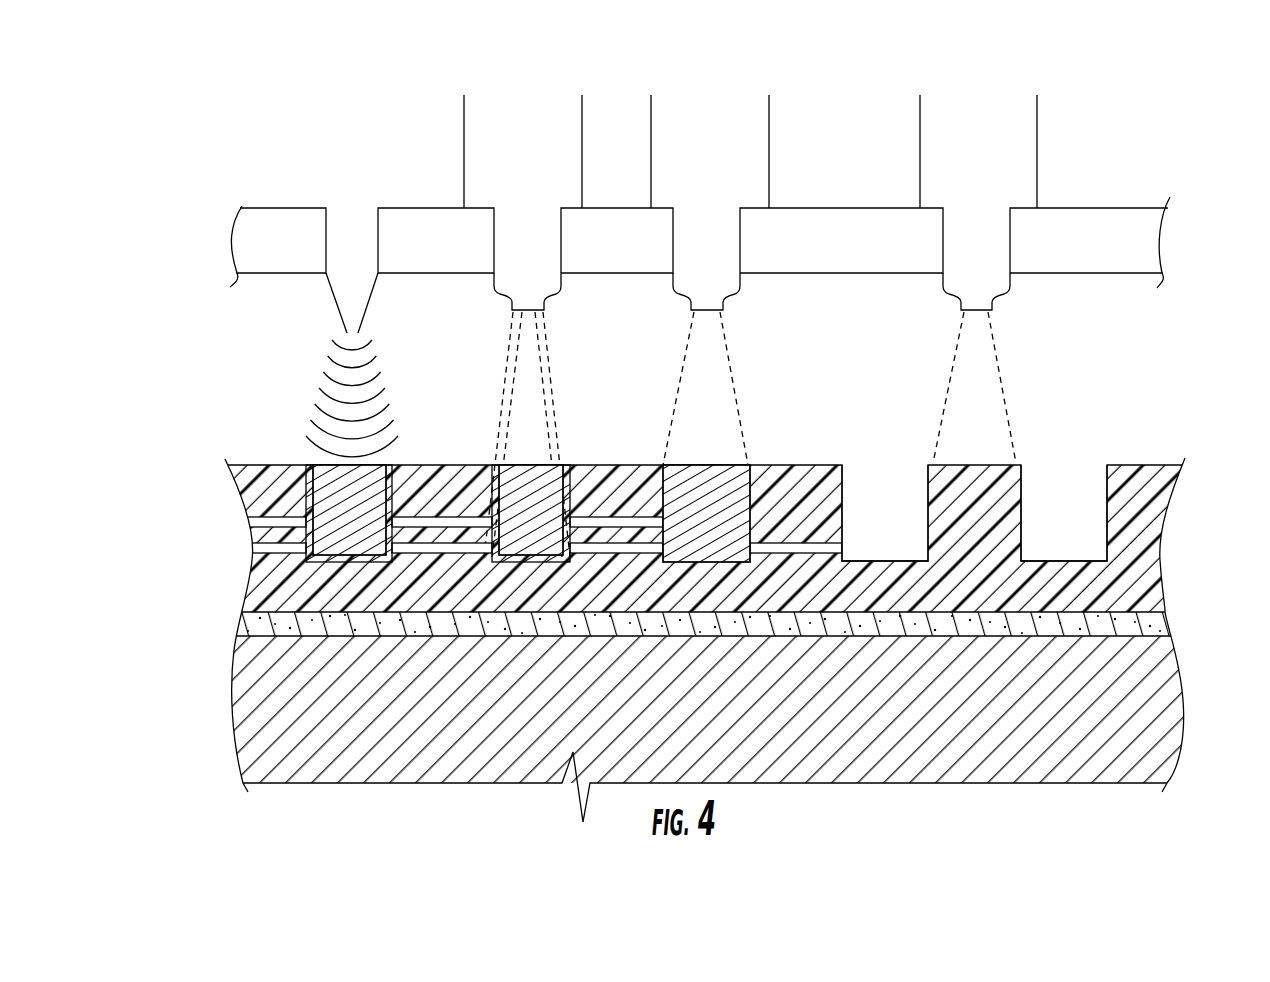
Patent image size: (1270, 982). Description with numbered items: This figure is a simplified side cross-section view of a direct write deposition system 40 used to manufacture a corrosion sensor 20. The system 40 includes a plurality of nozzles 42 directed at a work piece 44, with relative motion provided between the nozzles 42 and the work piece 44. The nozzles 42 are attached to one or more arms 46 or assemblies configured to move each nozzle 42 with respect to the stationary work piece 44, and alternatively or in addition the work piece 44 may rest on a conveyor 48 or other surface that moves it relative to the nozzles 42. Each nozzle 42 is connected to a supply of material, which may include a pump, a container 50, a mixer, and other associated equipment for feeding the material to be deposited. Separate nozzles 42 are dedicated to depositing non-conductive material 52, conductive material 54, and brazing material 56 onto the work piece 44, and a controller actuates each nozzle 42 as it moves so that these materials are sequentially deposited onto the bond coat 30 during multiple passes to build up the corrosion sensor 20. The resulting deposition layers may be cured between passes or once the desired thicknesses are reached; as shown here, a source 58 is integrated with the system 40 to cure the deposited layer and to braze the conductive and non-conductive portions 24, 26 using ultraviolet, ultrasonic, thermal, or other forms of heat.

The corrosion sensor 20 is at (217, 494).
The conductive portion 24 is at (697, 467).
The non-conductive portion 26 is at (977, 463).
The bond coat 30 is at (230, 623).
The direct write deposition system 40 is at (288, 151).
The nozzle 42 is at (551, 303).
The work piece 44 is at (1197, 467).
The arm 46 is at (1068, 208).
The conveyor 48 is at (222, 706).
The container 50 is at (510, 131).
The non-conductive material 52 is at (1002, 401).
The conductive material 54 is at (735, 415).
The brazing material 56 is at (497, 407).
The source 58 is at (330, 293).